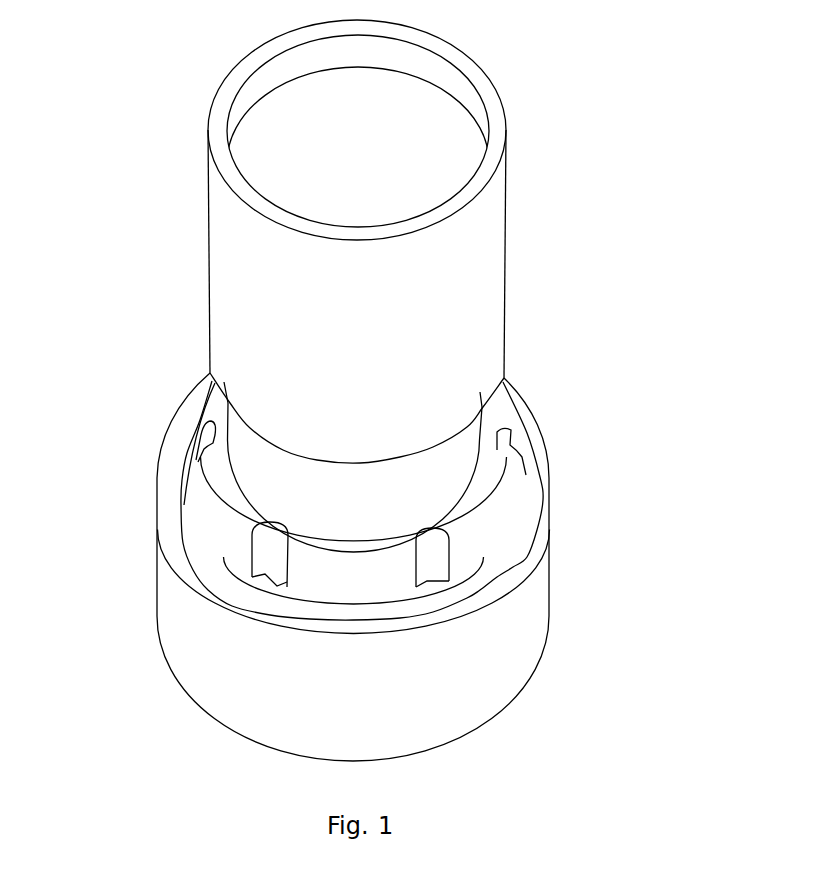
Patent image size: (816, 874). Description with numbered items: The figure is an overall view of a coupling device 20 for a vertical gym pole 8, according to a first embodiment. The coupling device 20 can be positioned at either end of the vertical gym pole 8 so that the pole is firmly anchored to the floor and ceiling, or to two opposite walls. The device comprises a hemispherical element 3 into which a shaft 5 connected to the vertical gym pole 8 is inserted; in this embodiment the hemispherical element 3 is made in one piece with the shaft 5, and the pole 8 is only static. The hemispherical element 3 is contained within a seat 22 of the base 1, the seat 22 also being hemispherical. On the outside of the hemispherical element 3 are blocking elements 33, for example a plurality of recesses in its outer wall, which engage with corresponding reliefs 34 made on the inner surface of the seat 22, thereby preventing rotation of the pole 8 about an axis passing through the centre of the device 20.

The base 1 is at (523, 689).
The hemispherical element 3 is at (485, 514).
The shaft 5 is at (247, 449).
The vertical gym pole 8 is at (505, 234).
The coupling device 20 is at (591, 392).
The seat 22 is at (497, 570).
The blocking elements 33 is at (275, 560).
The reliefs 34 is at (430, 581).